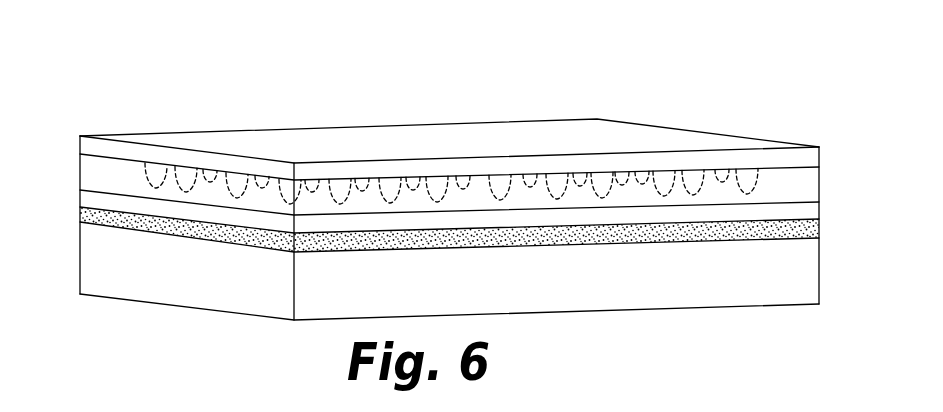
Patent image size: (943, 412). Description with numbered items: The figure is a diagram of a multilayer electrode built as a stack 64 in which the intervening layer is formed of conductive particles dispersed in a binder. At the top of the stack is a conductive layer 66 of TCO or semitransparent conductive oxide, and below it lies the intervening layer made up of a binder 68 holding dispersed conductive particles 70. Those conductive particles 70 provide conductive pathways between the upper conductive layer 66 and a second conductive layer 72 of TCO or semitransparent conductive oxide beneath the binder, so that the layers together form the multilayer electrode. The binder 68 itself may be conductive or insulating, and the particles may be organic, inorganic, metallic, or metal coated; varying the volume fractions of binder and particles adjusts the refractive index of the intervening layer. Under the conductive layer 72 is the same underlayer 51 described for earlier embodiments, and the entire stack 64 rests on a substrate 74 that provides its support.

The stack 64 is at (418, 182).
The conductive layer 66 is at (80, 144).
The binder 68 is at (420, 146).
The conductive particles 70 is at (150, 180).
The conductive layer 72 is at (92, 199).
The underlayer 51 is at (82, 217).
The substrate 74 is at (92, 280).